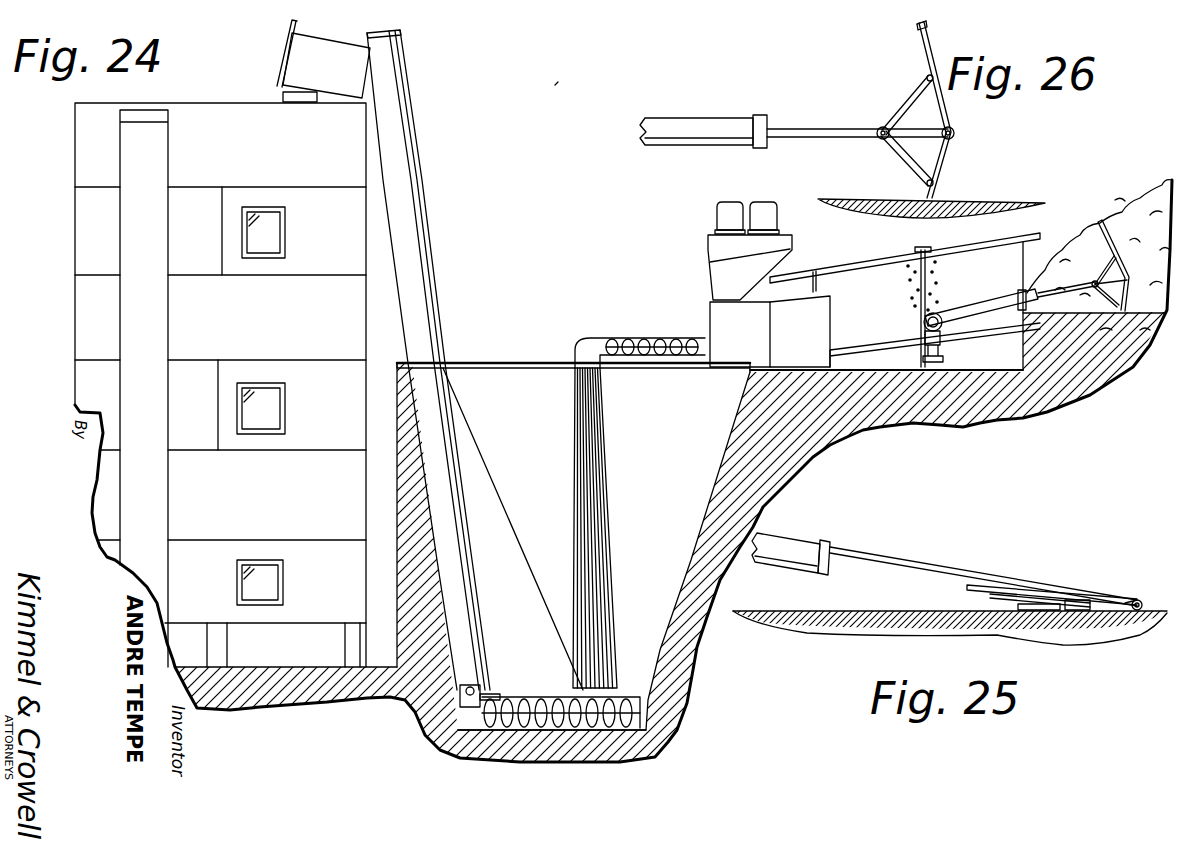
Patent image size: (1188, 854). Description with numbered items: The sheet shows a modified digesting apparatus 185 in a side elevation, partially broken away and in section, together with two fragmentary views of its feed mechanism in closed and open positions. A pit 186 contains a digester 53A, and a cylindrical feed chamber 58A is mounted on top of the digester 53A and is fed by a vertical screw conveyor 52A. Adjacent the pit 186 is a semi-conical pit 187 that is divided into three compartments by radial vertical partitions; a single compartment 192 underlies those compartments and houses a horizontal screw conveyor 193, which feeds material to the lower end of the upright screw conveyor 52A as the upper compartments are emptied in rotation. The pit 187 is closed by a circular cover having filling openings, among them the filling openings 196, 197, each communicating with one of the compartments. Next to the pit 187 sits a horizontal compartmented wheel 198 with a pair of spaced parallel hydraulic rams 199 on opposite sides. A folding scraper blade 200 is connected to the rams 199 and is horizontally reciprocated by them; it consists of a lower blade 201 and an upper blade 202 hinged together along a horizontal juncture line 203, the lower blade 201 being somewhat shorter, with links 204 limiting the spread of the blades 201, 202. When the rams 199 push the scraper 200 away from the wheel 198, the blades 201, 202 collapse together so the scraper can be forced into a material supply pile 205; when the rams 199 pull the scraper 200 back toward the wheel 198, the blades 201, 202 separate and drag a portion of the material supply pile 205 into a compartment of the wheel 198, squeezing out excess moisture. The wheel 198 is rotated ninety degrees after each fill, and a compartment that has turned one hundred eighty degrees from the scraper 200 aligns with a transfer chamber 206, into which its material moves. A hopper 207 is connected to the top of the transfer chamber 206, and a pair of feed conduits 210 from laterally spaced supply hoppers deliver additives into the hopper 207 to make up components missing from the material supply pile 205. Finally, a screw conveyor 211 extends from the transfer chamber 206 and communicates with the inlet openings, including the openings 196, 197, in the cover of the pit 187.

In FIG. 24, the digester 53A is at (61, 204).
In FIG. 24, the cylindrical feed chamber 58A is at (337, 82).
In FIG. 24, the vertical screw conveyor 52A is at (422, 217).
In FIG. 24, the digesting apparatus 185 is at (562, 87).
In FIG. 24, the pit 186 is at (378, 658).
In FIG. 24, the semi-conical pit 187 is at (655, 676).
In FIG. 24, the single compartment 192 is at (640, 705).
In FIG. 24, the horizontal screw conveyor 193 is at (523, 758).
In FIG. 24, the filling opening 196 is at (600, 370).
In FIG. 24, the filling opening 197 is at (553, 369).
In FIG. 24, the horizontal compartmented wheel 198 is at (947, 253).
In FIG. 24, the hydraulic rams 199 is at (958, 316).
In FIG. 26, the hydraulic rams 199 is at (722, 118).
In FIG. 25, the hydraulic rams 199 is at (803, 542).
In FIG. 24, the folding scraper blade 200 is at (1112, 210).
In FIG. 26, the folding scraper blade 200 is at (935, 35).
In FIG. 25, the folding scraper blade 200 is at (1118, 577).
In FIG. 24, the lower blade 201 is at (1121, 312).
In FIG. 26, the lower blade 201 is at (947, 173).
In FIG. 25, the lower blade 201 is at (1087, 604).
In FIG. 24, the upper blade 202 is at (1121, 262).
In FIG. 26, the upper blade 202 is at (937, 100).
In FIG. 25, the upper blade 202 is at (977, 587).
In FIG. 26, the horizontal juncture line 203 is at (955, 133).
In FIG. 25, the horizontal juncture line 203 is at (1136, 591).
In FIG. 24, the links 204 is at (1100, 332).
In FIG. 26, the links 204 is at (907, 110).
In FIG. 25, the links 204 is at (1023, 601).
In FIG. 24, the material supply pile 205 is at (1165, 164).
In FIG. 24, the transfer chamber 206 is at (758, 372).
In FIG. 24, the hopper 207 is at (708, 253).
In FIG. 24, the feed conduits 210 is at (760, 203).
In FIG. 24, the screw conveyor 211 is at (640, 338).